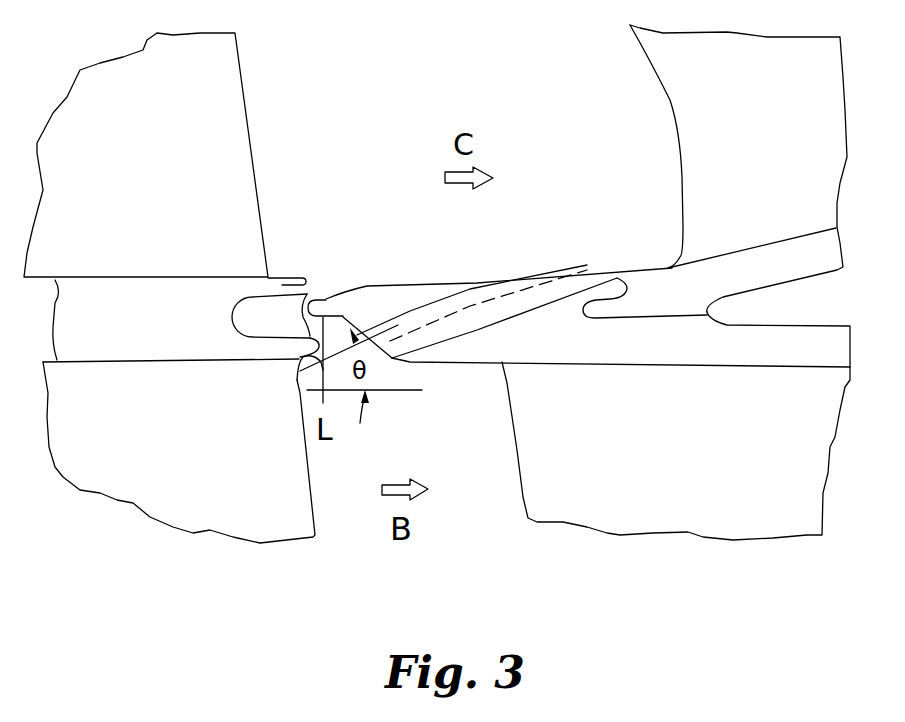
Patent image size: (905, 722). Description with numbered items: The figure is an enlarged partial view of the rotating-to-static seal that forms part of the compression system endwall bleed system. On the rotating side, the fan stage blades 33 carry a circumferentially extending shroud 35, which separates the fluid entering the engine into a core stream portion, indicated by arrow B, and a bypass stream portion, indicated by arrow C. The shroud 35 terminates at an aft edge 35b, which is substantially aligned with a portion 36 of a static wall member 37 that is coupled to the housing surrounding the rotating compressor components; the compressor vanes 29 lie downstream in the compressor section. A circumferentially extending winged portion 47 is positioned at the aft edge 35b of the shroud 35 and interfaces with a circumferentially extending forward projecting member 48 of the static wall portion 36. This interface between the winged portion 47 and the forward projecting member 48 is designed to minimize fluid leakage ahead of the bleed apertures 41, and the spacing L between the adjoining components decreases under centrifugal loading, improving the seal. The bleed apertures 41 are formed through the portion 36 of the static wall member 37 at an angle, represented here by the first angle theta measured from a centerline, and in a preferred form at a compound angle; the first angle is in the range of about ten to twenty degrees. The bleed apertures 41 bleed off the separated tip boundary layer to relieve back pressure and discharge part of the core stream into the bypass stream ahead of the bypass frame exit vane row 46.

The compressor vanes 29 is at (767, 508).
The blades 33 is at (70, 173).
The shroud 35 is at (93, 340).
The aft edge 35b is at (275, 283).
The portion of static wall member 36 is at (392, 297).
The static wall member 37 is at (483, 333).
The bleed apertures 41 is at (463, 302).
The bypass frame exit vane row 46 is at (677, 55).
The winged portion 47 is at (302, 280).
The forward projecting member 48 is at (317, 310).